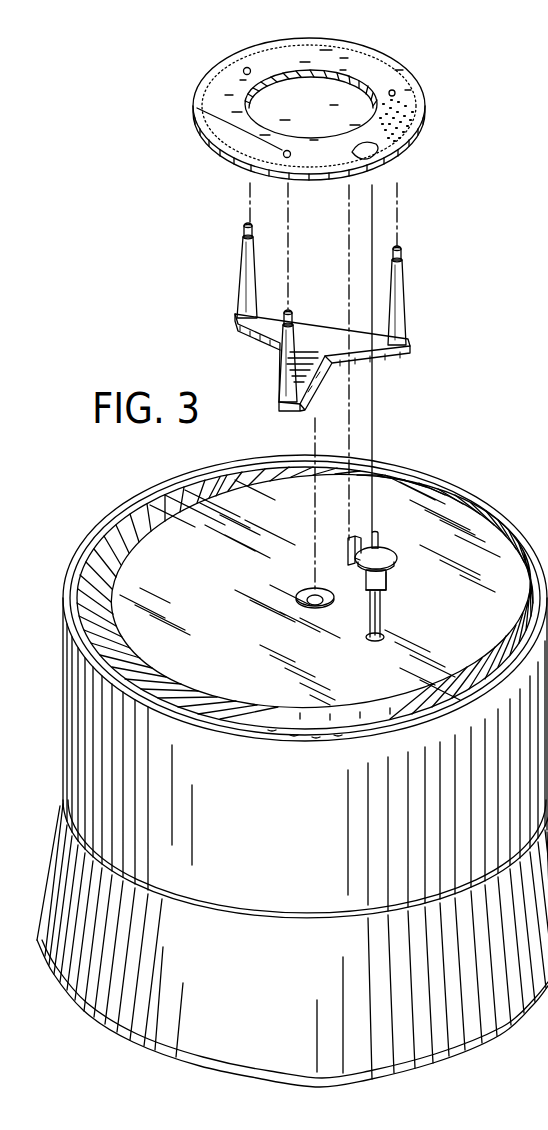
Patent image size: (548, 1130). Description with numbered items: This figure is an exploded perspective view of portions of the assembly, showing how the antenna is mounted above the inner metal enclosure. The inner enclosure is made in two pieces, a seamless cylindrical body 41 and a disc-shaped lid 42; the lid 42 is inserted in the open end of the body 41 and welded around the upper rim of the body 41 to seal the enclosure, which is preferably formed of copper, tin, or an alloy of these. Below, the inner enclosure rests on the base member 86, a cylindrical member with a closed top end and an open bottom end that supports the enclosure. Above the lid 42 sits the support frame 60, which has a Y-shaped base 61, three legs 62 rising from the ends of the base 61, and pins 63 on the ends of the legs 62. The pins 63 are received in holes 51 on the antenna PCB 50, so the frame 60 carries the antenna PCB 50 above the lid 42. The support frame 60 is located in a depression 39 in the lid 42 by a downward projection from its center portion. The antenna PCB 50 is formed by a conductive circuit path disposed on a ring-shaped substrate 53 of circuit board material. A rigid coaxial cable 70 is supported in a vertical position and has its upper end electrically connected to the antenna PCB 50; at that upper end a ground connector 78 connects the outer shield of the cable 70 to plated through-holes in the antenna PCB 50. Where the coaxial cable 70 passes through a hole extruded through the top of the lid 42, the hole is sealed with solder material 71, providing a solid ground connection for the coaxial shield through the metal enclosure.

The depression 39 is at (315, 607).
The seamless cylindrical body 41 is at (100, 703).
The disc-shaped lid 42 is at (135, 559).
The antenna PCB 50 is at (309, 95).
The holes 51 is at (200, 112).
The ring-shaped substrate 53 is at (423, 122).
The support frame 60 is at (327, 307).
The Y-shaped base 61 is at (405, 348).
The legs 62 is at (223, 260).
The pins 63 is at (245, 224).
The rigid coaxial cable 70 is at (431, 575).
The solder material 71 is at (382, 548).
The ground connector 78 is at (395, 560).
The base member 86 is at (50, 803).